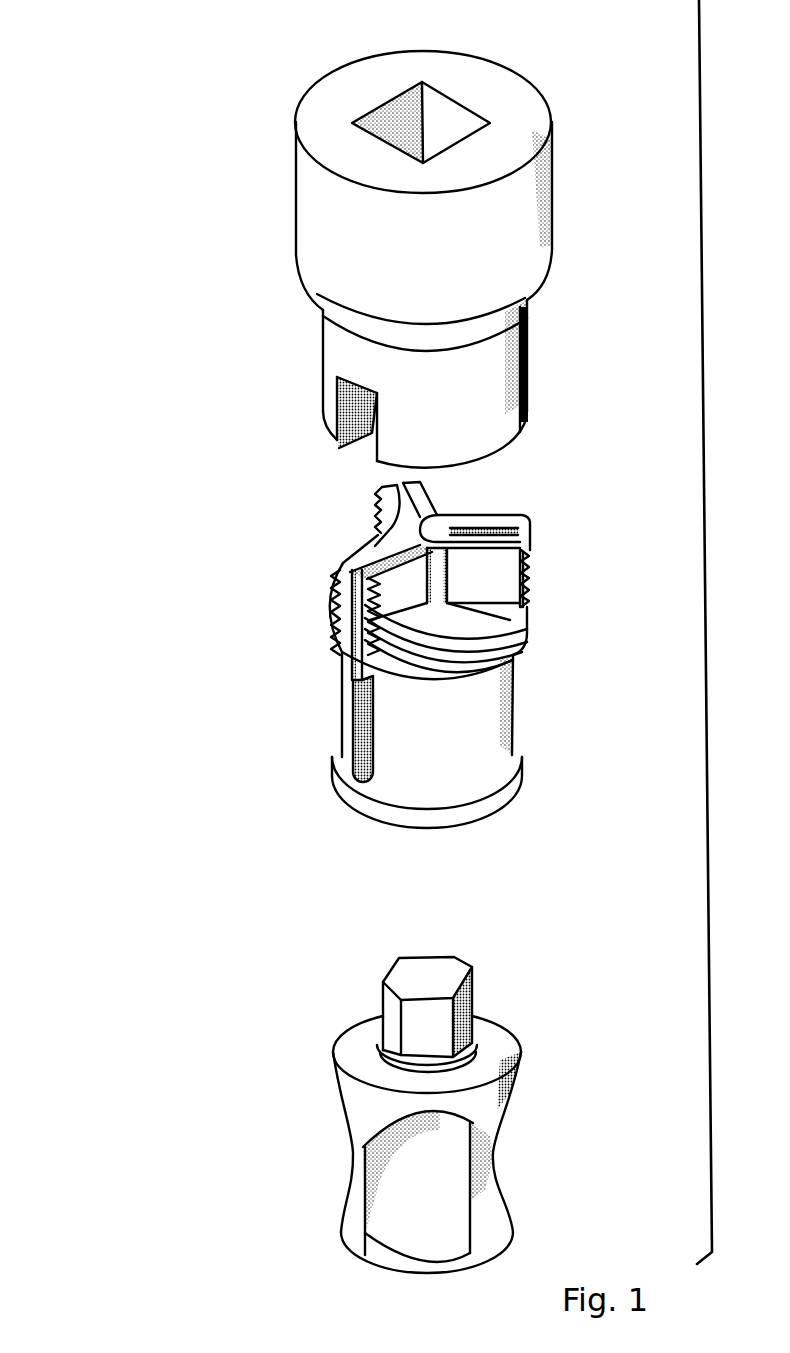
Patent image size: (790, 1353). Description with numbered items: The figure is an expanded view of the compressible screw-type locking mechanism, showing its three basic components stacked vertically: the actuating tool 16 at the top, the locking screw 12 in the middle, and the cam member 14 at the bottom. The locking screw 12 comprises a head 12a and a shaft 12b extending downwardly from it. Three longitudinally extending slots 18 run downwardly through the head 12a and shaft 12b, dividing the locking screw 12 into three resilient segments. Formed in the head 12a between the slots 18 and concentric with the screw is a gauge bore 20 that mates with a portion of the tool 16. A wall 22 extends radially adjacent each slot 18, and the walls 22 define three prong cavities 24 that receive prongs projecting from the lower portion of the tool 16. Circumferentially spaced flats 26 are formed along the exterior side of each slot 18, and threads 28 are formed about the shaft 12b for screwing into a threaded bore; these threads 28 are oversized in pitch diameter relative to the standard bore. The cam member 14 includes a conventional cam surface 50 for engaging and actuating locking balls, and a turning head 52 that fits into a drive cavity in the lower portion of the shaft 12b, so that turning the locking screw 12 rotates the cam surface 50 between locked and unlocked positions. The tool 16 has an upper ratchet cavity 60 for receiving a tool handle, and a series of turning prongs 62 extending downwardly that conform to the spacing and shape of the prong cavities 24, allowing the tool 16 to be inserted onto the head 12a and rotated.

The locking screw 12 is at (243, 693).
The head 12a is at (315, 559).
The shaft 12b is at (300, 787).
The cam member 14 is at (207, 1105).
The actuating tool 16 is at (195, 188).
The longitudinal slots 18 is at (382, 488).
The gauge bore 20 is at (450, 515).
The wall 22 is at (378, 545).
The prong cavities 24 is at (505, 622).
The flats 26 is at (328, 608).
The threads 28 is at (430, 676).
The cam surface 50 is at (423, 1198).
The turning head 52 is at (432, 970).
The ratchet cavity 60 is at (427, 125).
The turning prongs 62 is at (322, 413).